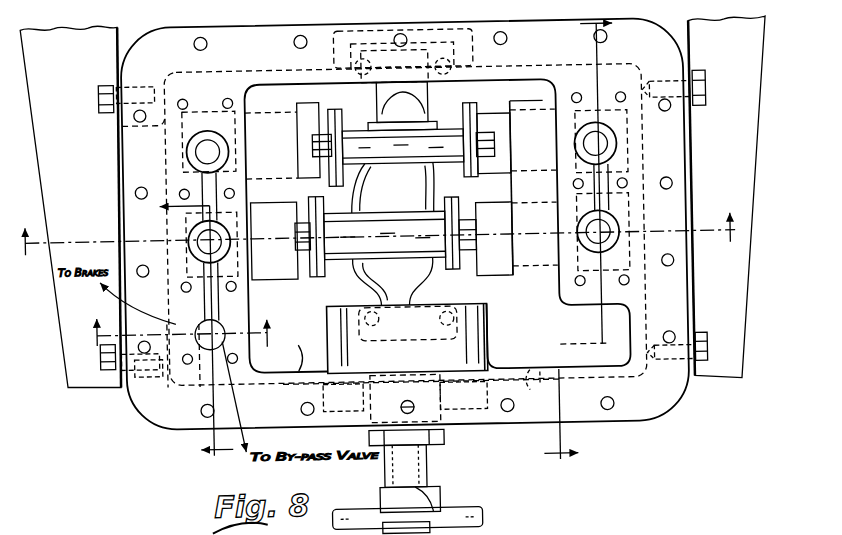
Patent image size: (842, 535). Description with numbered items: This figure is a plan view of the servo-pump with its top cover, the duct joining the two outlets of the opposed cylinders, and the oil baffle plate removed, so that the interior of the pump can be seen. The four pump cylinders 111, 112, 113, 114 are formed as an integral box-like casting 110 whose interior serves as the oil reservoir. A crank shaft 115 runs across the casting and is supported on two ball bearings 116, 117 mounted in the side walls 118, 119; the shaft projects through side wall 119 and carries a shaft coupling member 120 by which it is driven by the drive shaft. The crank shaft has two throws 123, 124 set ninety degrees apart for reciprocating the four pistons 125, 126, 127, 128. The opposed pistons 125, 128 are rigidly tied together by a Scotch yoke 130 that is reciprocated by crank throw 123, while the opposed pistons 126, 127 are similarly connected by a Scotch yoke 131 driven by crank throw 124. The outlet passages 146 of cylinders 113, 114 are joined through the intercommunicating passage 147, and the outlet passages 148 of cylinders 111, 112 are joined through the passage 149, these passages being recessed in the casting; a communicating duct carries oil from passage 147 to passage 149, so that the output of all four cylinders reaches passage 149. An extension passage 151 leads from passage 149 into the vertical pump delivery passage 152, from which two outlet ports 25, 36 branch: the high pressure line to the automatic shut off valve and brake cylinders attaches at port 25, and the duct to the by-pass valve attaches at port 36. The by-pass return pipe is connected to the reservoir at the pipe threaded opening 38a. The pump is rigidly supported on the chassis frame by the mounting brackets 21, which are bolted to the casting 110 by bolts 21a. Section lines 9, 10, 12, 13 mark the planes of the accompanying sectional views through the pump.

The section line 9- 9 is at (377, 221).
The section line 10- 10 is at (594, 244).
The section line 12- 12 is at (180, 330).
The section line 13- 13 is at (183, 321).
The mounting bracket 21 is at (67, 284).
The bolt 21a is at (110, 94).
The outlet port 25 is at (171, 381).
The outlet port 36 is at (263, 404).
The pipe threaded opening 38a is at (537, 407).
The cylinder block casting 110 is at (146, 412).
The pump cylinder 111 is at (289, 263).
The pump cylinder 112 is at (282, 114).
The pump cylinder 113 is at (533, 127).
The pump cylinder 114 is at (531, 262).
The crank shaft 115 is at (406, 459).
The ball bearing 116 is at (470, 58).
The ball bearing 117 is at (468, 325).
The side wall 118 is at (285, 69).
The side wall 119 is at (307, 345).
The shaft coupling member 120 is at (454, 516).
The crank throw 123 is at (379, 281).
The crank throw 124 is at (359, 179).
The piston 125 is at (367, 262).
The piston 126 is at (325, 120).
The piston 127 is at (505, 163).
The piston 128 is at (504, 249).
The Scotch yoke 130 is at (435, 237).
The Scotch yoke 131 is at (444, 140).
The outlet passage 146 is at (619, 148).
The intercommunicating passage 147 is at (607, 179).
The outlet passage 148 is at (190, 146).
The passage 149 is at (202, 173).
The extension passage 151 is at (205, 292).
The pump delivery passage 152 is at (219, 338).